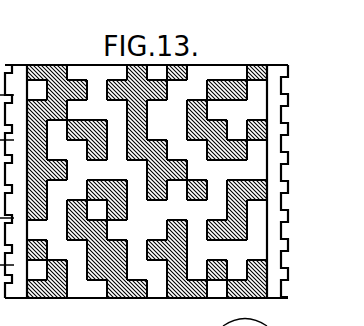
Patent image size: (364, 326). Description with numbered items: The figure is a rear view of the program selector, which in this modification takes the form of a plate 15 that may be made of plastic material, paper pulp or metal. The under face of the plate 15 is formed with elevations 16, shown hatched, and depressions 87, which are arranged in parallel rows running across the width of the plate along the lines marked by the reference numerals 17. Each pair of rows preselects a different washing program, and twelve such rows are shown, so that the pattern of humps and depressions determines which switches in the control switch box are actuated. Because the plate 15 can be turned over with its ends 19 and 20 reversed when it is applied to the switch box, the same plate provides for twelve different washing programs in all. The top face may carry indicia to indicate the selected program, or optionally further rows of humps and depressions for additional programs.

The plate 15 is at (167, 298).
The elevations 16 is at (198, 68).
The rows 17 is at (283, 107).
The end 19 is at (90, 72).
The end 20 is at (100, 299).
The depressions 87 is at (224, 72).